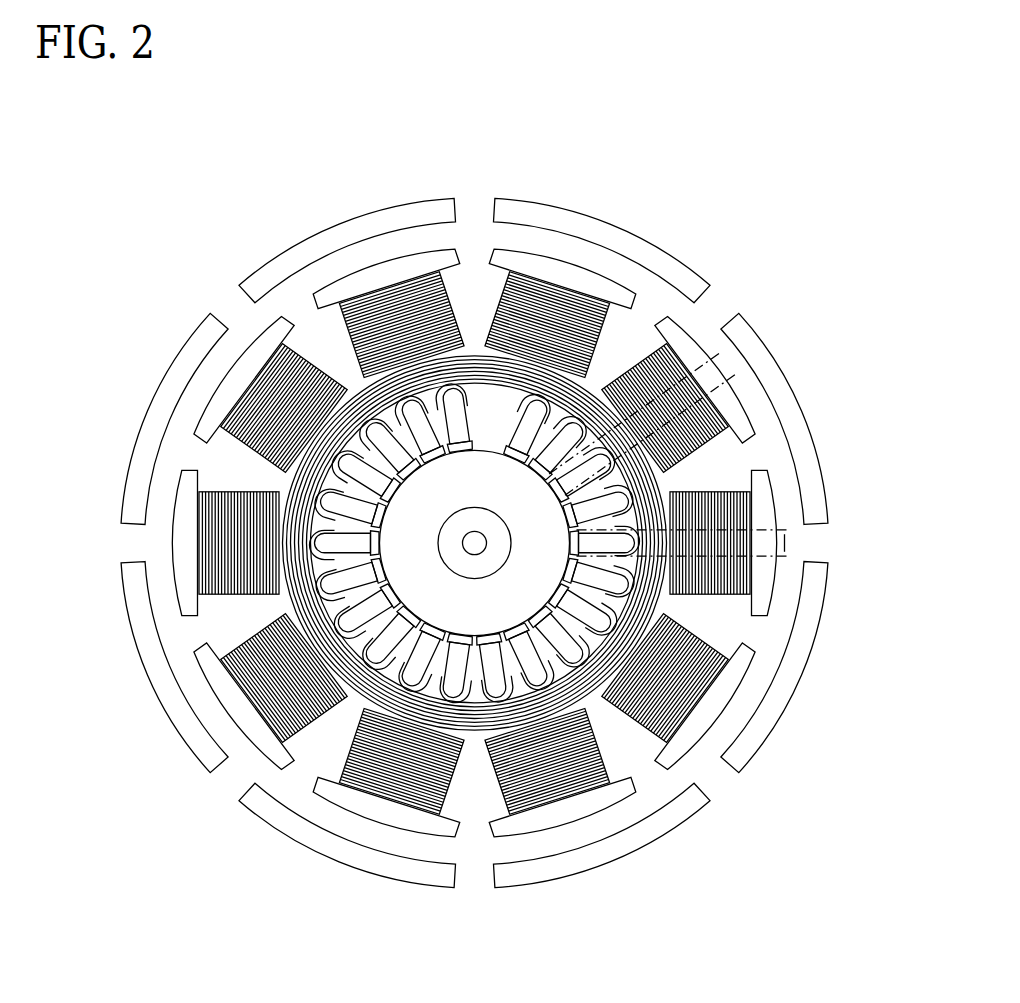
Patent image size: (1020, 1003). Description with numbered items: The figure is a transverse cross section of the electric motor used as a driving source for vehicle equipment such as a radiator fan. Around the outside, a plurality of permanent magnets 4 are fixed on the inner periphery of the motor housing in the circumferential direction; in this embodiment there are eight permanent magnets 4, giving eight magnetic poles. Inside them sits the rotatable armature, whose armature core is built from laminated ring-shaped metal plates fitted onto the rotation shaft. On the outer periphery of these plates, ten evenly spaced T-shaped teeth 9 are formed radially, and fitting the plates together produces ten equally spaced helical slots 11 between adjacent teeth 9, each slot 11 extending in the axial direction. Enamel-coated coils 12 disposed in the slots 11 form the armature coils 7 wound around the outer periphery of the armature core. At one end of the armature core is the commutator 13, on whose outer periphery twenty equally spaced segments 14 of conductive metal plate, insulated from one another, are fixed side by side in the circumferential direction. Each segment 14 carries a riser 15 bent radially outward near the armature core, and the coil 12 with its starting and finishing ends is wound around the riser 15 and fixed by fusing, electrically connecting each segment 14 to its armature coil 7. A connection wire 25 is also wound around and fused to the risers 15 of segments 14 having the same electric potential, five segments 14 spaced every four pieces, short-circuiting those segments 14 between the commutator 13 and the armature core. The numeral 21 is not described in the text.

The permanent magnet 4 is at (646, 236).
The armature coil 7 is at (556, 283).
The tooth 9 is at (762, 578).
The slot 11 is at (292, 800).
The coil 12 is at (393, 787).
The commutator 13 is at (438, 578).
The segment 14 is at (493, 637).
The riser 15 is at (382, 447).
The pole center line 21 is at (785, 543).
The connection wire 25 is at (475, 730).